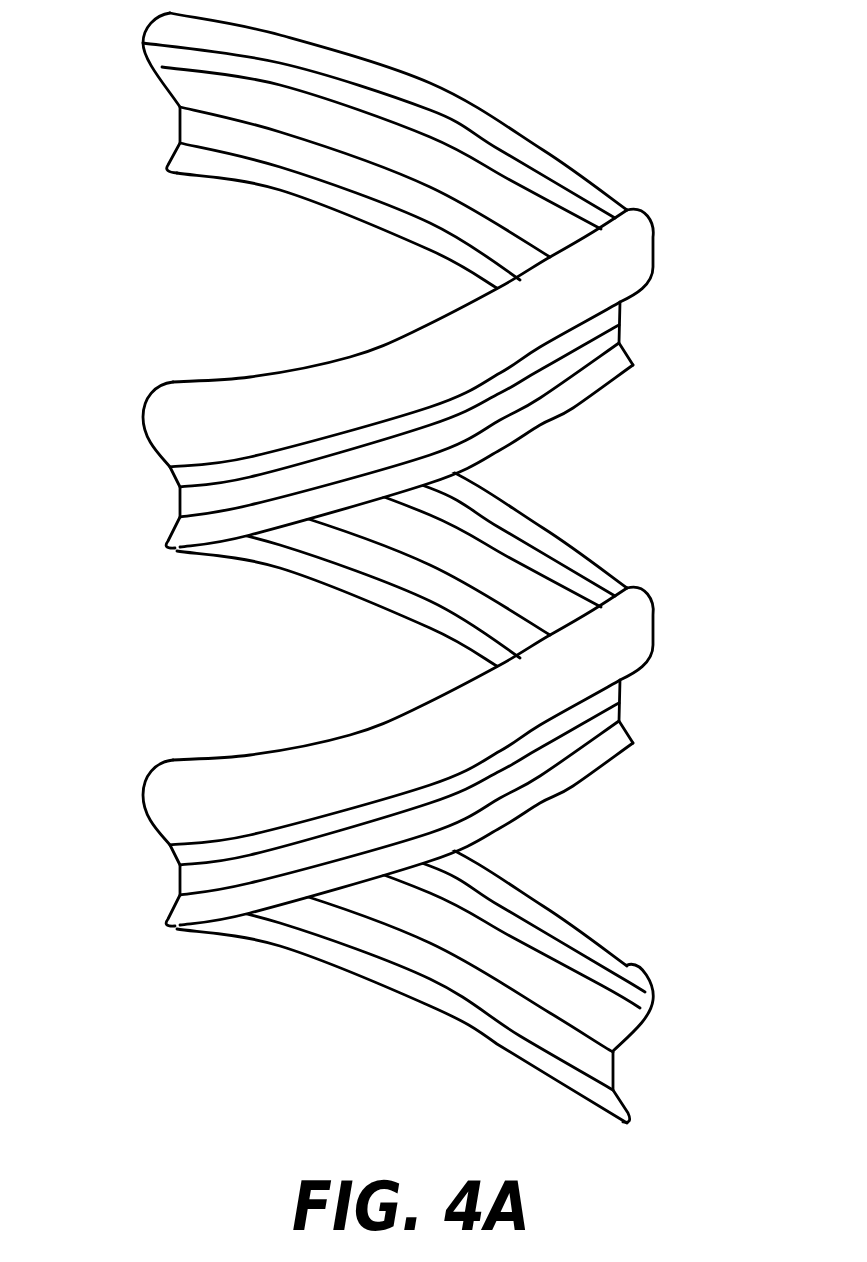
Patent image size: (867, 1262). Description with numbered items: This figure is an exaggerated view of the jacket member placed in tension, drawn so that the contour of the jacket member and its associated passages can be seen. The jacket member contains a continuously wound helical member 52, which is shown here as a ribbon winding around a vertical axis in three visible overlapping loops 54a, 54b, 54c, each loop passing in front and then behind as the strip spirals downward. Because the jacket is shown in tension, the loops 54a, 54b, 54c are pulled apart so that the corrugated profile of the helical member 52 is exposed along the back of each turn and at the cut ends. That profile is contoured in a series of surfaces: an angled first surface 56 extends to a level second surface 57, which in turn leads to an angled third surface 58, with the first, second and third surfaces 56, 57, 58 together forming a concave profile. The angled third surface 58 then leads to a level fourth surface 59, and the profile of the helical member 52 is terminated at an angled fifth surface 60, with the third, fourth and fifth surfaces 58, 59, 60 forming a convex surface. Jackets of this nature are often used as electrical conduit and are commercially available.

The helical member 52 is at (143, 57).
The overlapping loop 54a is at (663, 237).
The overlapping loop 54b is at (658, 612).
The overlapping loop 54c is at (657, 993).
The angled first surface 56 is at (340, 964).
The level second surface 57 is at (444, 979).
The angled third surface 58 is at (548, 990).
The level fourth surface 59 is at (542, 933).
The angled fifth surface 60 is at (513, 890).